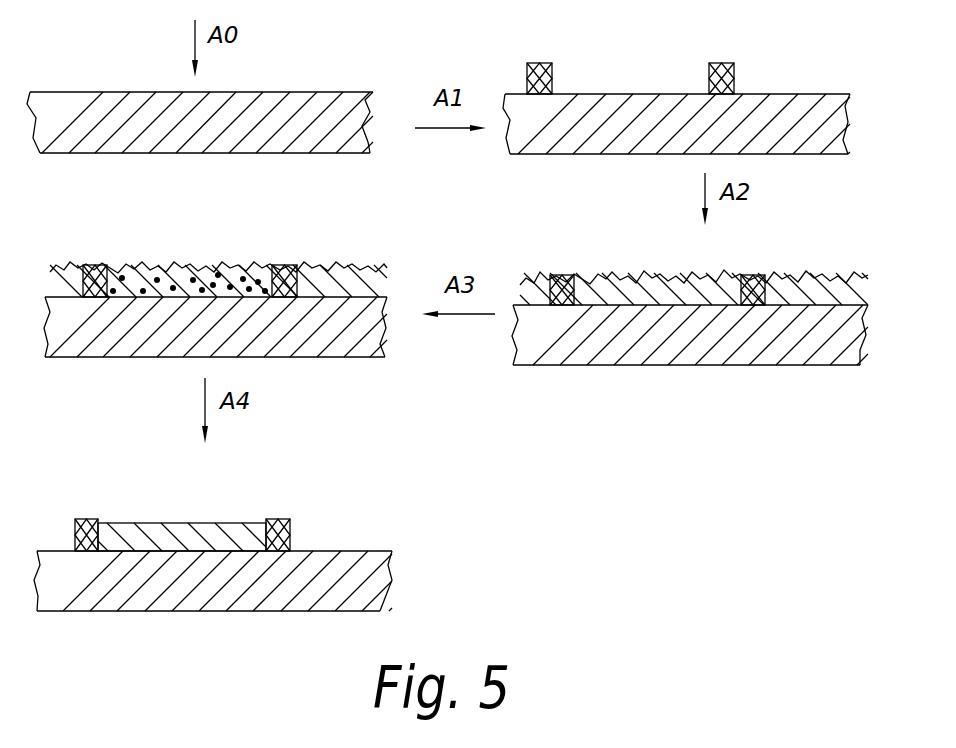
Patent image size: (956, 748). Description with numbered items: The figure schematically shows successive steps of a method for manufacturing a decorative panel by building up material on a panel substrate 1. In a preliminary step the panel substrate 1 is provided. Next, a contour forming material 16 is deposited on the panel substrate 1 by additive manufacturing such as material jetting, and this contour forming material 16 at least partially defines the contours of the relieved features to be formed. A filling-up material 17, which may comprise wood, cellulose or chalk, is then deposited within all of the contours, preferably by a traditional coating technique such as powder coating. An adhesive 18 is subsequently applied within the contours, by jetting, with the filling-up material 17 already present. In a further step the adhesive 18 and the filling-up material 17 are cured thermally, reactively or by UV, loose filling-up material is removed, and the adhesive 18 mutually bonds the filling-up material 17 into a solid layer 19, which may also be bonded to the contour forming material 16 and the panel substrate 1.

The panel substrate 1 is at (65, 100).
The contour forming material 16 is at (530, 83).
The filling-up material 17 is at (647, 295).
The adhesive 18 is at (235, 278).
The solid layer 19 is at (172, 535).